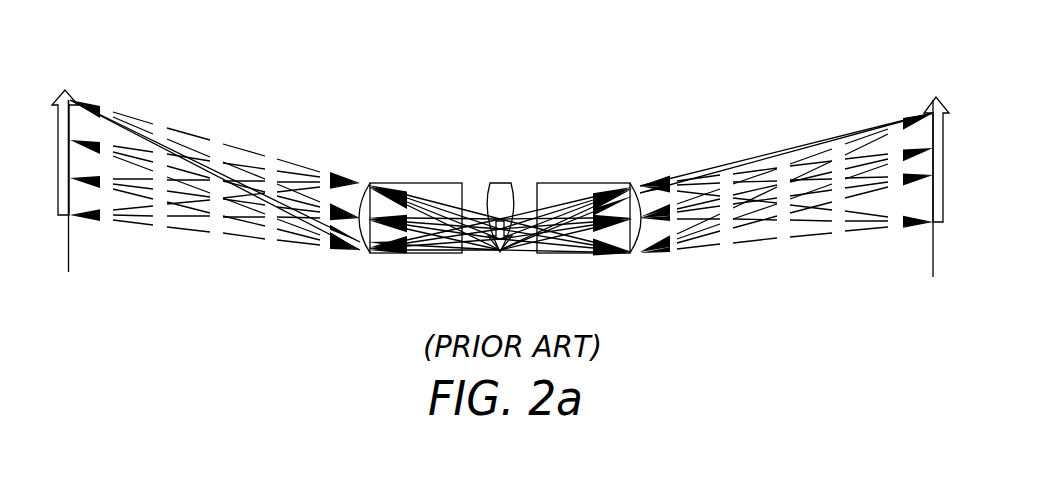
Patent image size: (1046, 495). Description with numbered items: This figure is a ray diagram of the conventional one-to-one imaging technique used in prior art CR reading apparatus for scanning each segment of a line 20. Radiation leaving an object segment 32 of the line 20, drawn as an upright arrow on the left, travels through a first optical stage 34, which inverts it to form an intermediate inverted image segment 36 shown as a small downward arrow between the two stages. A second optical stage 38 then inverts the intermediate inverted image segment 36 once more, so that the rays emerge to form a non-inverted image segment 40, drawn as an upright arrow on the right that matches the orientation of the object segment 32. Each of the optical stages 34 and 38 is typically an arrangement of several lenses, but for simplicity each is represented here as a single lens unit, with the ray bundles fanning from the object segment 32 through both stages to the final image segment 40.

The line 20 is at (72, 246).
The object segment 32 is at (101, 93).
The first optical stage 34 is at (407, 183).
The intermediate inverted image segment 36 is at (486, 184).
The second optical stage 38 is at (585, 183).
The non-inverted image segment 40 is at (911, 79).